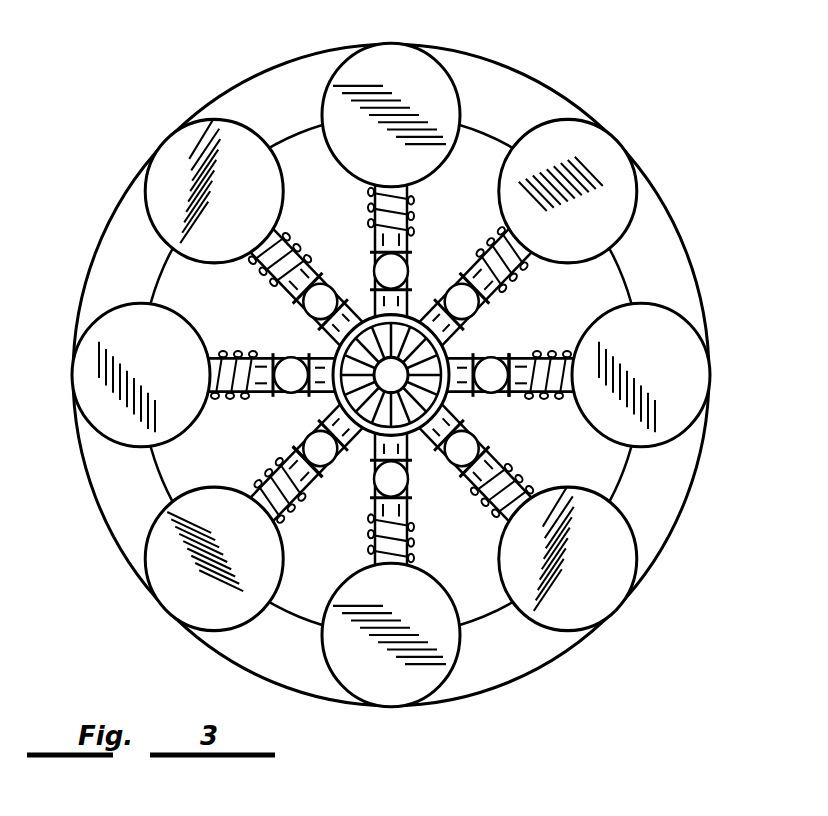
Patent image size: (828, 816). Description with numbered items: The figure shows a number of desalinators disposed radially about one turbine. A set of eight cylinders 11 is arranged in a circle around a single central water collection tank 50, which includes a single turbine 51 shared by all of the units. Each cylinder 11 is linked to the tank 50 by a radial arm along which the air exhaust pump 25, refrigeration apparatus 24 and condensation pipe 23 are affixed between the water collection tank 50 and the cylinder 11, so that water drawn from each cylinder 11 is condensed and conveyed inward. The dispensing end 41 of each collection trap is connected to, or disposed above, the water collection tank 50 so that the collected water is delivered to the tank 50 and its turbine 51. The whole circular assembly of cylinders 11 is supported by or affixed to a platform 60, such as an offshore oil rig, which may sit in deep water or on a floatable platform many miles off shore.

The cylinder 11 is at (402, 72).
The condensation pipe 23 is at (517, 353).
The refrigeration apparatus 24 is at (566, 397).
The air exhaust pump 25 is at (490, 353).
The dispensing end 41 is at (334, 350).
The water collection tank 50 is at (418, 317).
The turbine 51 is at (416, 416).
The platform 60 is at (652, 246).